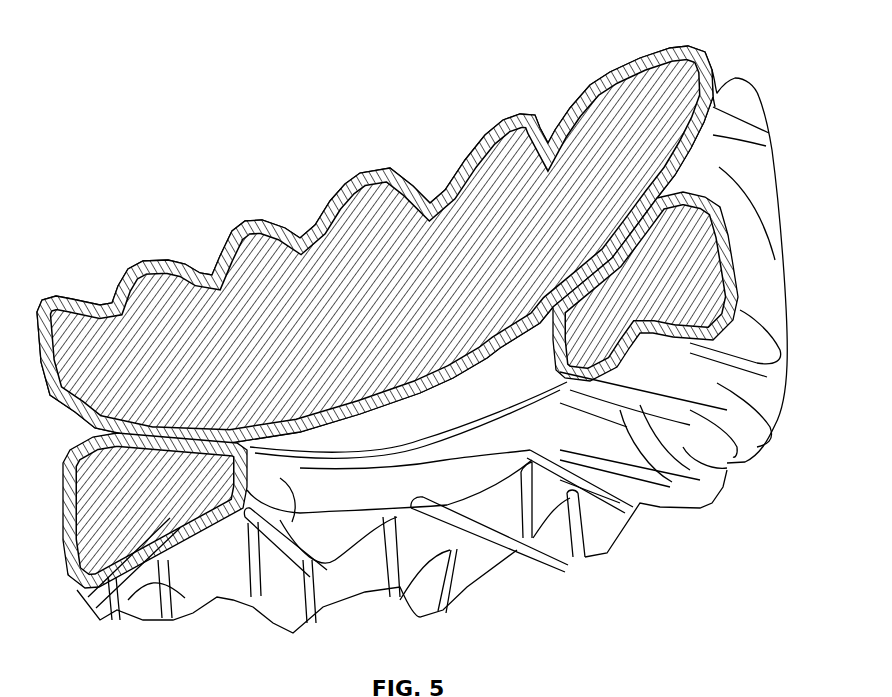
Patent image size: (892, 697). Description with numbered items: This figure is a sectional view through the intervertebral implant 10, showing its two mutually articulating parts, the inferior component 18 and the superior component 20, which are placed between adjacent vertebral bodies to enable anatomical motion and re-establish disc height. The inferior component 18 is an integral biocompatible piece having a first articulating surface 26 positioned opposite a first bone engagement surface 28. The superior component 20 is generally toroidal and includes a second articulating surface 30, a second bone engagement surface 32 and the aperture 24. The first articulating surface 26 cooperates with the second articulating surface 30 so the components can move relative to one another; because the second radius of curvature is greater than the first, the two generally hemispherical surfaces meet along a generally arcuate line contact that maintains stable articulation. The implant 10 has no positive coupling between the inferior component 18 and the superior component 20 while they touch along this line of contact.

The intervertebral implant 10 is at (738, 40).
The inferior component 18 is at (775, 104).
The superior component 20 is at (795, 326).
The aperture 24 is at (238, 598).
The first articulating surface 26 is at (768, 213).
The first bone engagement surface 28 is at (270, 223).
The second articulating surface 30 is at (102, 424).
The second bone engagement surface 32 is at (605, 530).